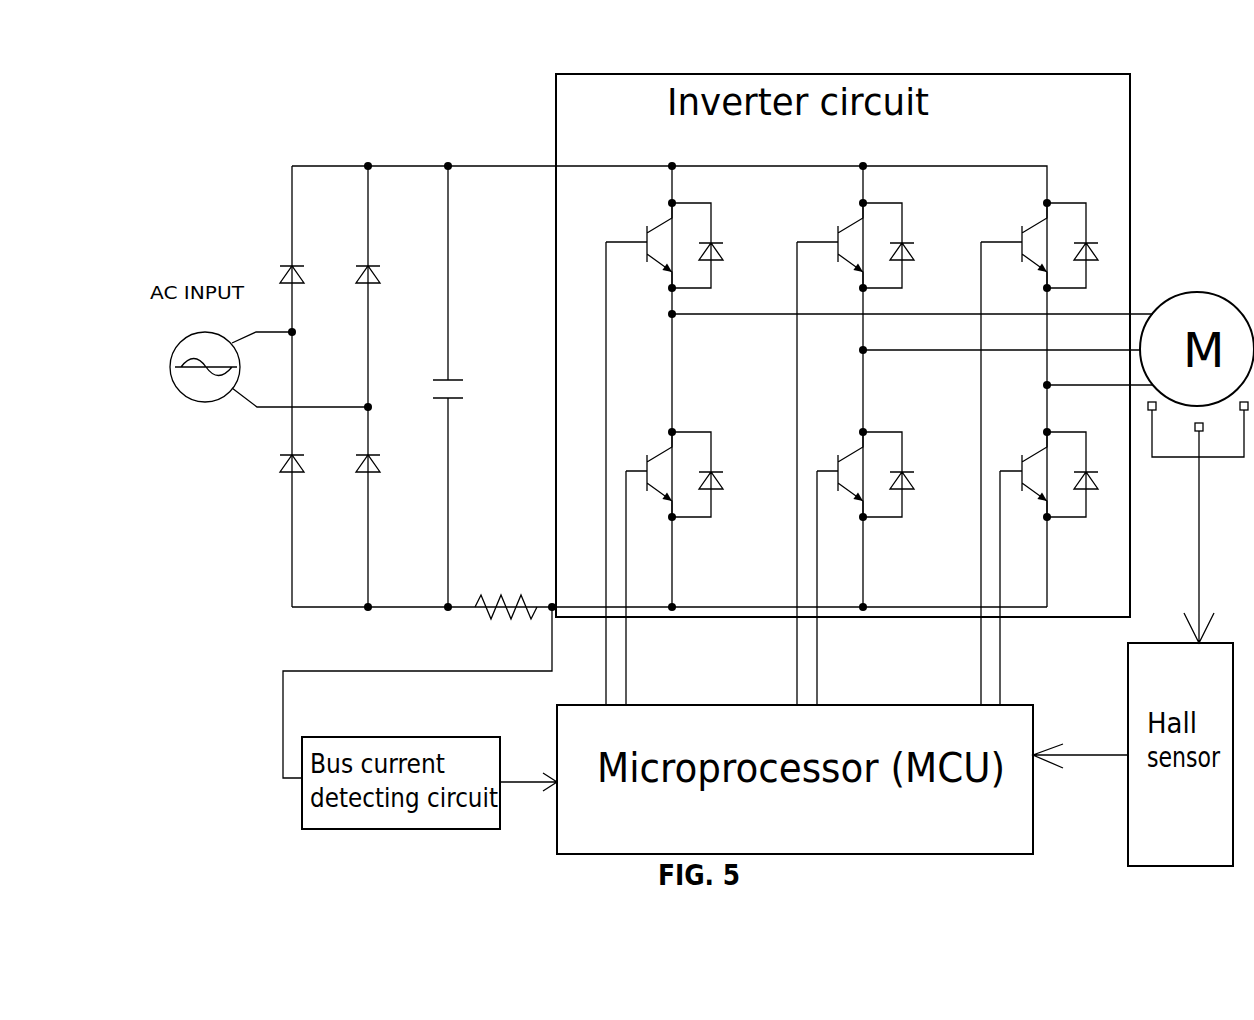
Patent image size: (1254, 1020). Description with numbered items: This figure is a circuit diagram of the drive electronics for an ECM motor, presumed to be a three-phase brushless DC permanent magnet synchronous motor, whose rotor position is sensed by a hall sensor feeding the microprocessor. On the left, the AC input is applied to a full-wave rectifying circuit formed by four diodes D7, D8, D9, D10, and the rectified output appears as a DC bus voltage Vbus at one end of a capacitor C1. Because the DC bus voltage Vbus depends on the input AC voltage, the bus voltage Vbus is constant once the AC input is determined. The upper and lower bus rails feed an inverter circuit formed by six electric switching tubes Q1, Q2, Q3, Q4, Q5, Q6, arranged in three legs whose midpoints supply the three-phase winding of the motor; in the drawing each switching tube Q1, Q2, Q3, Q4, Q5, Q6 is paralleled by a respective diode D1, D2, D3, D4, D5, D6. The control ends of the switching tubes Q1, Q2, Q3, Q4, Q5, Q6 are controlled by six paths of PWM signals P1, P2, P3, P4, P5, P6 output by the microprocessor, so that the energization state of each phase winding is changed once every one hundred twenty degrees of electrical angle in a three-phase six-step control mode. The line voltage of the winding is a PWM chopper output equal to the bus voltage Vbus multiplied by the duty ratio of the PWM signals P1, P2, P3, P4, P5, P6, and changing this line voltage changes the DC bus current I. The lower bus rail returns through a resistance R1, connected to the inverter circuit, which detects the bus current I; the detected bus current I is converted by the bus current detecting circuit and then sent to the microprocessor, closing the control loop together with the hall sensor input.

The DC bus voltage Vbus is at (669, 163).
The diode D7 is at (310, 269).
The diode D8 is at (384, 267).
The diode D9 is at (310, 464).
The diode D10 is at (392, 464).
The capacitor C1 is at (461, 386).
The resistance R1 is at (506, 586).
The DC bus current I is at (417, 692).
The electric switching tube Q1 is at (641, 241).
The electric switching tube Q2 is at (832, 245).
The electric switching tube Q3 is at (1016, 244).
The electric switching tube Q4 is at (649, 469).
The electric switching tube Q5 is at (842, 469).
The electric switching tube Q6 is at (1025, 471).
The freewheeling diode D1 is at (717, 245).
The freewheeling diode D2 is at (905, 245).
The freewheeling diode D3 is at (1085, 245).
The freewheeling diode D4 is at (712, 474).
The freewheeling diode D5 is at (902, 474).
The freewheeling diode D6 is at (1087, 474).
The PWM signal P1 is at (588, 473).
The PWM signal P2 is at (643, 588).
The PWM signal P3 is at (781, 473).
The PWM signal P4 is at (835, 588).
The PWM signal P5 is at (958, 473).
The PWM signal P6 is at (1029, 588).